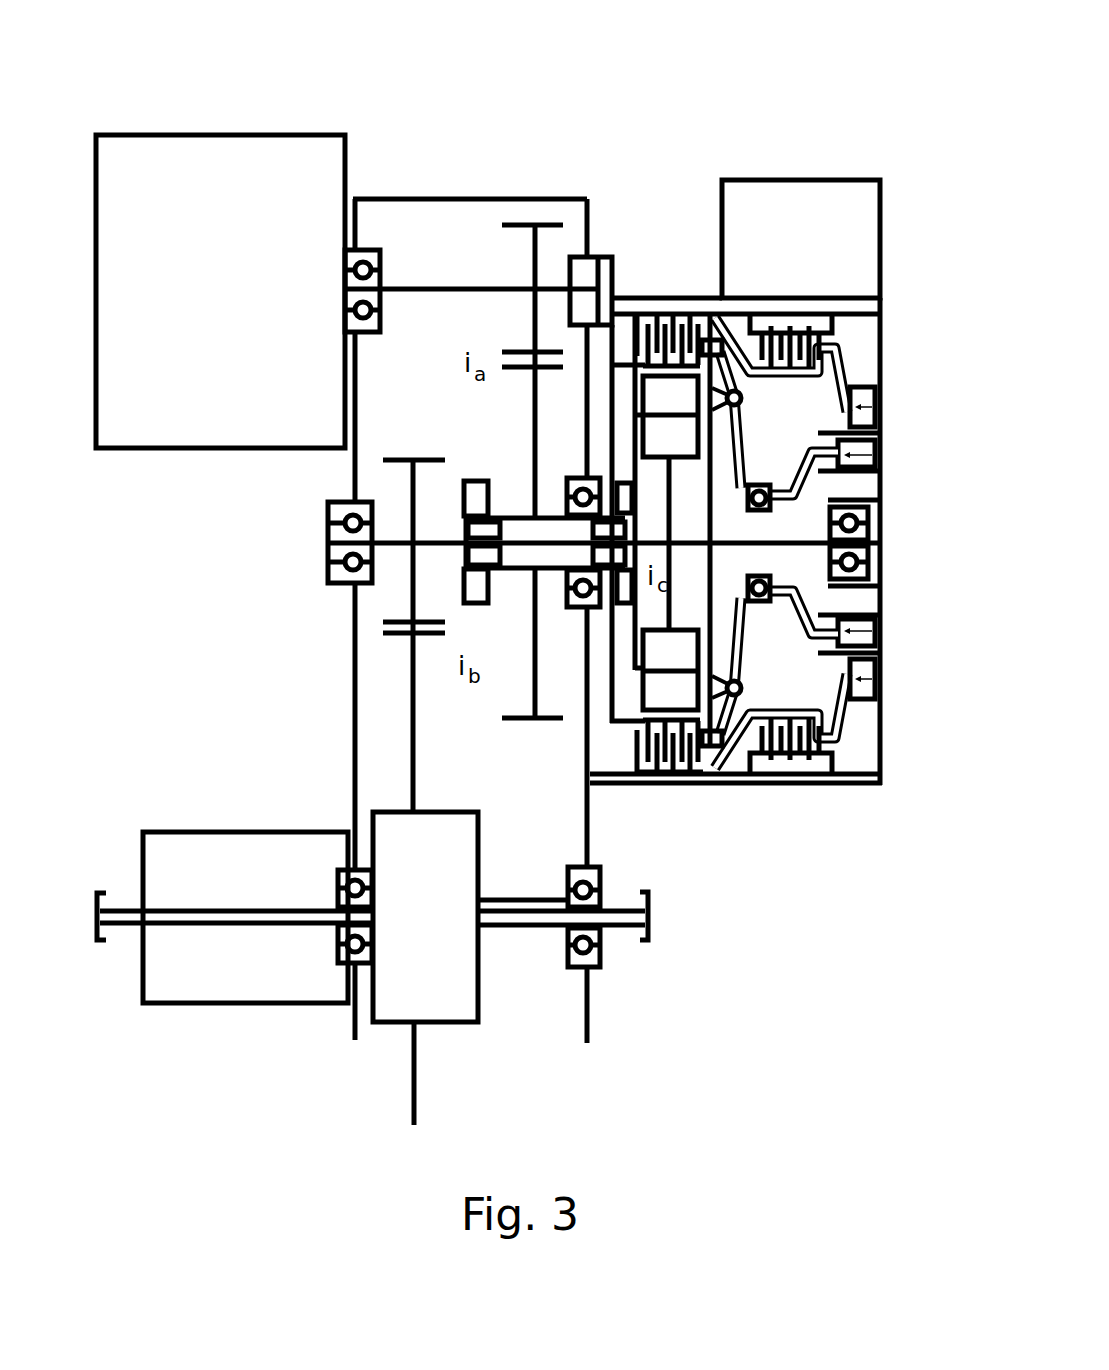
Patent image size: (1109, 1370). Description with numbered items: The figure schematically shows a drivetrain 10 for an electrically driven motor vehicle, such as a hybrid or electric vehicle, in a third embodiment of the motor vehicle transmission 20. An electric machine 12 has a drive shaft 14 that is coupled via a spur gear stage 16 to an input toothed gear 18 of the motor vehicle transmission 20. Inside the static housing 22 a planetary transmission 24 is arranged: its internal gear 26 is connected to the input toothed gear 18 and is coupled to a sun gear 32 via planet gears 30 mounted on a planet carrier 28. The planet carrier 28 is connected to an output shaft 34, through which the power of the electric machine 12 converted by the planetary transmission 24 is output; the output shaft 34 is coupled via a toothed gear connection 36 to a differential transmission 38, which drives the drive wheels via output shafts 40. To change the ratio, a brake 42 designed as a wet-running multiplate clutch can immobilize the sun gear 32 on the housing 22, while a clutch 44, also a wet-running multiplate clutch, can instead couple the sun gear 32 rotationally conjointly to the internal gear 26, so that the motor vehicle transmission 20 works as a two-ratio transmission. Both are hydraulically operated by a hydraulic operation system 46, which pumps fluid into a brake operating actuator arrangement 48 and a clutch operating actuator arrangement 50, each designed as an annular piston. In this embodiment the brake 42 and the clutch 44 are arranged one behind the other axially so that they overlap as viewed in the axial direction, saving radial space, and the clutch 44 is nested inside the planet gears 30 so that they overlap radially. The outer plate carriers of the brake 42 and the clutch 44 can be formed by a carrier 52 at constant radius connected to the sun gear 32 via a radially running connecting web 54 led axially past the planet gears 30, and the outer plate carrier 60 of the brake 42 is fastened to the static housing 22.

The drivetrain 10 is at (806, 76).
The electric machine 12 is at (248, 138).
The drive shaft 14 is at (398, 288).
The spur gear stage 16 is at (509, 322).
The input toothed gear 18 is at (536, 433).
The motor vehicle transmission 20 is at (692, 812).
The housing 22 is at (880, 330).
The planetary transmission 24 is at (622, 748).
The internal gear 26 is at (620, 365).
The planet carrier 28 is at (636, 437).
The planet gears 30 is at (664, 367).
The sun gear 32 is at (676, 578).
The output shaft 34 is at (385, 543).
The toothed gear connection 36 is at (386, 652).
The differential transmission 38 is at (411, 970).
The output shafts 40 is at (123, 915).
The brake 42 is at (785, 738).
The clutch 44 is at (682, 738).
The hydraulic operation system 46 is at (807, 234).
The brake operating actuator arrangement 48 is at (862, 402).
The clutch operating actuator arrangement 50 is at (833, 462).
The carrier 52 is at (730, 317).
The connecting web 54 is at (709, 509).
The outer plate carrier 60 is at (780, 768).